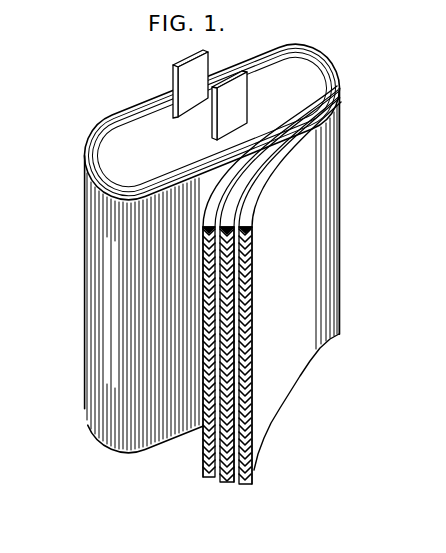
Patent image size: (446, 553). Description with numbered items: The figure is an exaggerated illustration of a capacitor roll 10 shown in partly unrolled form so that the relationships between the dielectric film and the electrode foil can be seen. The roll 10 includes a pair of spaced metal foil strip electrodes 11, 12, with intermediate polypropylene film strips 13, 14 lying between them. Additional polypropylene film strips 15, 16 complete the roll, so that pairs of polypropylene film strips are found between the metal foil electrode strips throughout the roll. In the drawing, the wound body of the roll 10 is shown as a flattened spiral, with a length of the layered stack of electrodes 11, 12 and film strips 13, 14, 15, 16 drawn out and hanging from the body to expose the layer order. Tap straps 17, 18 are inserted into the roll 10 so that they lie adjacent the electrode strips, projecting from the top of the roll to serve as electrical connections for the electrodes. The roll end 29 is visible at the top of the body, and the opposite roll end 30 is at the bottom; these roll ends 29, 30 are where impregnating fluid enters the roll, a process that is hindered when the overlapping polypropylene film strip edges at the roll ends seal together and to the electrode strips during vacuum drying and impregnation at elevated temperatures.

The capacitor roll 10 is at (123, 100).
The metal foil strip electrode 11 is at (213, 303).
The metal foil strip electrode 12 is at (253, 307).
The polypropylene film strip 13 is at (223, 481).
The polypropylene film strip 14 is at (234, 482).
The polypropylene film strip 15 is at (203, 453).
The polypropylene film strip 16 is at (250, 447).
The tap strap 17 is at (173, 80).
The tap strap 18 is at (248, 90).
The roll end 29 is at (110, 146).
The roll end 30 is at (122, 449).